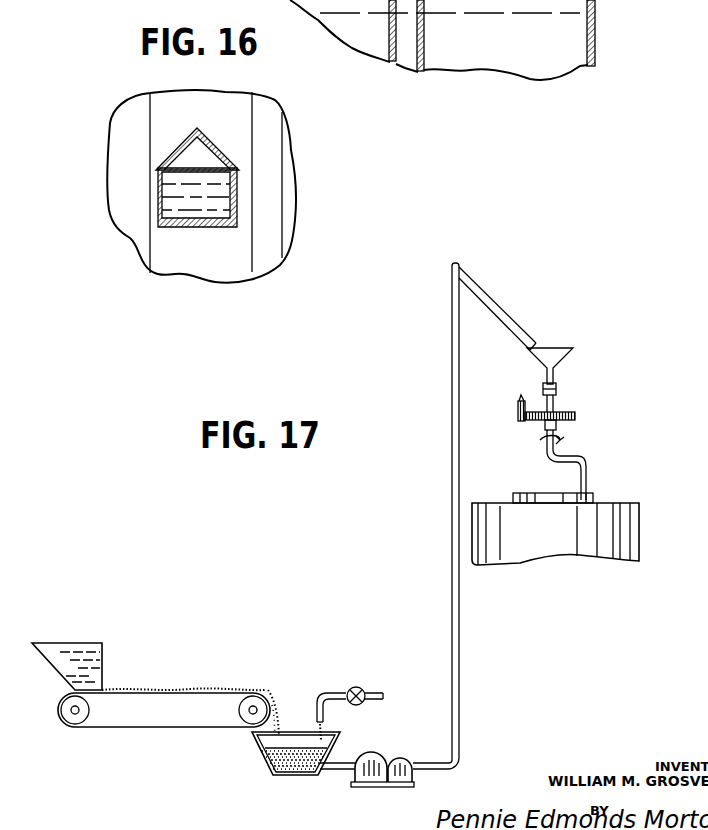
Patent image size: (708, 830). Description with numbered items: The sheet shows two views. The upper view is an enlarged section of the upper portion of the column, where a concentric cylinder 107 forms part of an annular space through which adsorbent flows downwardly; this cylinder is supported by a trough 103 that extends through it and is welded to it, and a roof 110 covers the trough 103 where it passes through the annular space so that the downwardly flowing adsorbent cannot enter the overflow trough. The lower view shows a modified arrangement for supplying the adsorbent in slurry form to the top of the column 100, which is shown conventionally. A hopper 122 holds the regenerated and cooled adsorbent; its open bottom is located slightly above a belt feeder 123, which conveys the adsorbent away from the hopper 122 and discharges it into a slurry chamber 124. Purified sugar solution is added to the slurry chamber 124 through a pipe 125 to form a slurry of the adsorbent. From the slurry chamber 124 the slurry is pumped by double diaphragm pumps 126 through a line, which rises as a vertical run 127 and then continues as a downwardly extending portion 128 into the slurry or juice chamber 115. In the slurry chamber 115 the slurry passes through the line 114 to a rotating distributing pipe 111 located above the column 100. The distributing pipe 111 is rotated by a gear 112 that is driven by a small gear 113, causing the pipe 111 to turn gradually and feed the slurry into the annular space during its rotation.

In FIG. 17, the column 100 is at (639, 522).
In FIG. 16, the trough 103 is at (232, 185).
In FIG. 16, the concentric cylinder 107 is at (296, 186).
In FIG. 17, the concentric cylinder 107 is at (589, 501).
In FIG. 16, the roof 110 is at (199, 130).
In FIG. 17, the rotating distributing pipe 111 is at (574, 462).
In FIG. 17, the gear 112 is at (577, 398).
In FIG. 17, the small gear 113 is at (520, 413).
In FIG. 17, the line 114 is at (546, 408).
In FIG. 17, the slurry chamber 115 is at (565, 350).
In FIG. 17, the hopper 122 is at (86, 646).
In FIG. 17, the belt feeder 123 is at (171, 692).
In FIG. 17, the slurry chamber 124 is at (272, 766).
In FIG. 17, the pipe 125 is at (336, 690).
In FIG. 17, the double diaphragm pump 126 is at (373, 783).
In FIG. 17, the riser pipe 127 is at (456, 545).
In FIG. 17, the downwardly extending portion of line 128 is at (503, 306).